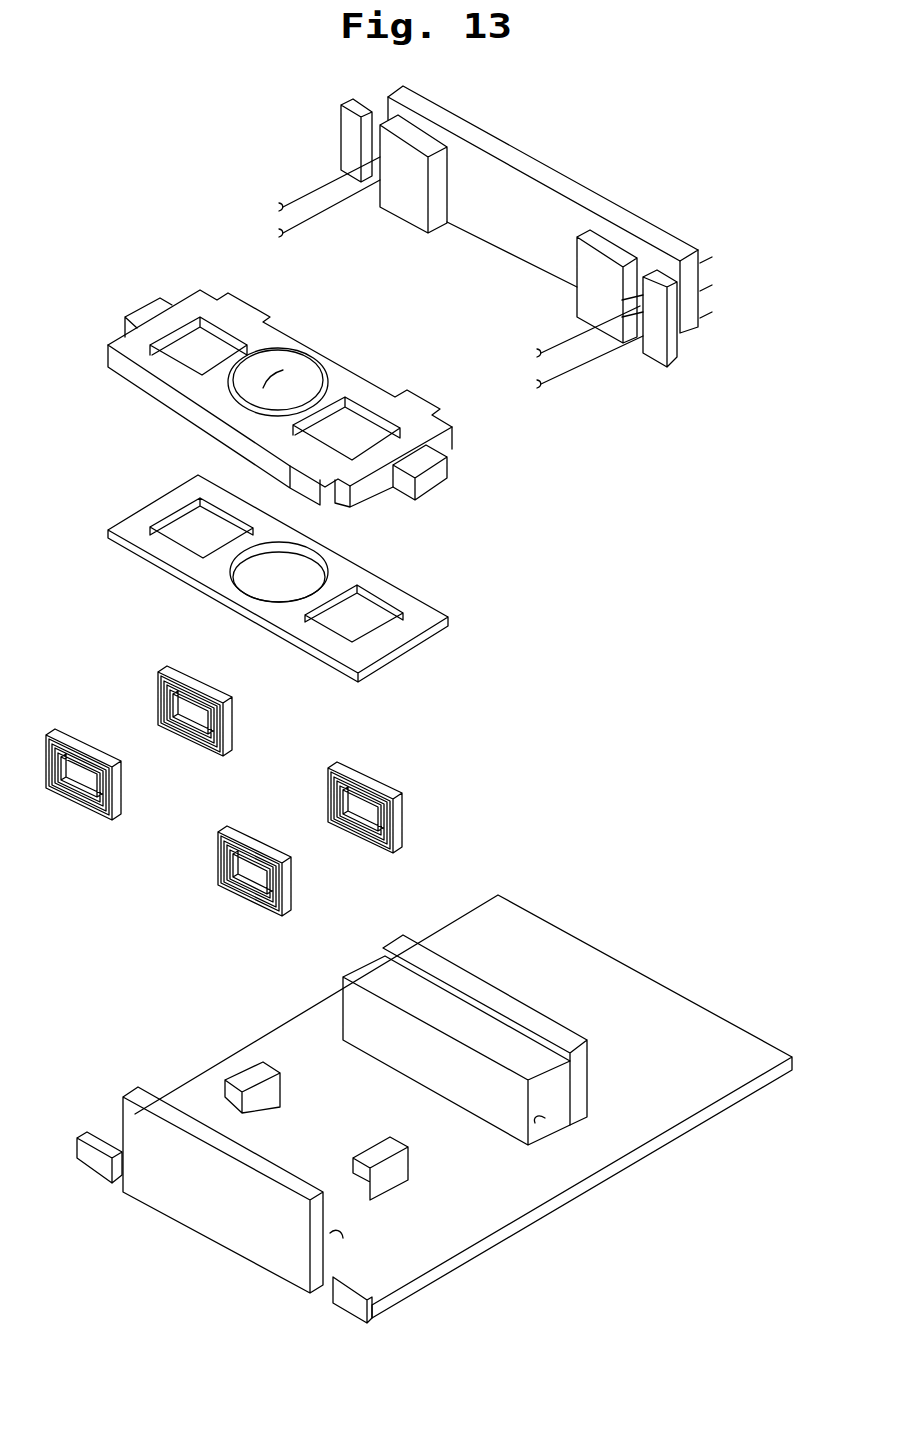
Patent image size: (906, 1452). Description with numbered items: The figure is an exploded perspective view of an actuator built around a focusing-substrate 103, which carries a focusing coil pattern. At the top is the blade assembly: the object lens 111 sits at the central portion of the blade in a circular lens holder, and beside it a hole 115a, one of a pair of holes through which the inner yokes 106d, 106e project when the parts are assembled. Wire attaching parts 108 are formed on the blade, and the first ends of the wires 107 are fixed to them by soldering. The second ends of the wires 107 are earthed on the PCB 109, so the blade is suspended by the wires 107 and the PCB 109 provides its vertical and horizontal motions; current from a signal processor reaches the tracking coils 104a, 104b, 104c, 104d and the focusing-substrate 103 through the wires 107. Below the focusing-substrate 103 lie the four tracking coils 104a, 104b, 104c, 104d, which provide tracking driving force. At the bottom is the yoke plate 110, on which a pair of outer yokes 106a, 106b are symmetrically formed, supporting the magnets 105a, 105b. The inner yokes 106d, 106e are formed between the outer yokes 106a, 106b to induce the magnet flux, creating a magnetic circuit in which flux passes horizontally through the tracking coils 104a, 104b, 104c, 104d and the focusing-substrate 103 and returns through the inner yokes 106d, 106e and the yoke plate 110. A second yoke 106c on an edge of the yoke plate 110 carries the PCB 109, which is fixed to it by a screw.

The focusing-substrate 103 is at (415, 623).
The tracking coil 104a is at (225, 743).
The tracking coil 104b is at (372, 782).
The tracking coil 104c is at (62, 737).
The tracking coil 104d is at (288, 905).
The magnet 105a is at (535, 1123).
The magnet 105b is at (330, 1233).
The outer yoke 106a is at (577, 1100).
The outer yoke 106b is at (257, 1247).
The second yoke 106c is at (673, 322).
The inner yoke 106d is at (388, 1175).
The inner yoke 106e is at (250, 1080).
The wires 107 is at (590, 360).
The wire attaching part 108 is at (415, 480).
The PCB 109 is at (632, 218).
The yoke plate 110 is at (395, 1270).
The object lens 111 is at (297, 368).
The hole 115a is at (222, 360).